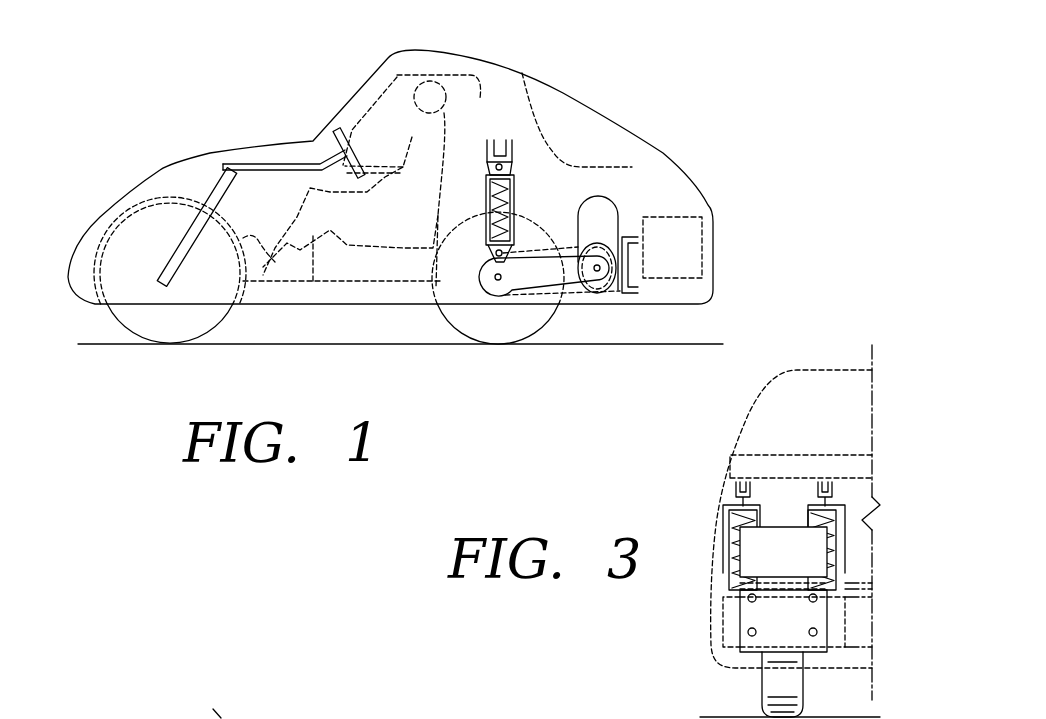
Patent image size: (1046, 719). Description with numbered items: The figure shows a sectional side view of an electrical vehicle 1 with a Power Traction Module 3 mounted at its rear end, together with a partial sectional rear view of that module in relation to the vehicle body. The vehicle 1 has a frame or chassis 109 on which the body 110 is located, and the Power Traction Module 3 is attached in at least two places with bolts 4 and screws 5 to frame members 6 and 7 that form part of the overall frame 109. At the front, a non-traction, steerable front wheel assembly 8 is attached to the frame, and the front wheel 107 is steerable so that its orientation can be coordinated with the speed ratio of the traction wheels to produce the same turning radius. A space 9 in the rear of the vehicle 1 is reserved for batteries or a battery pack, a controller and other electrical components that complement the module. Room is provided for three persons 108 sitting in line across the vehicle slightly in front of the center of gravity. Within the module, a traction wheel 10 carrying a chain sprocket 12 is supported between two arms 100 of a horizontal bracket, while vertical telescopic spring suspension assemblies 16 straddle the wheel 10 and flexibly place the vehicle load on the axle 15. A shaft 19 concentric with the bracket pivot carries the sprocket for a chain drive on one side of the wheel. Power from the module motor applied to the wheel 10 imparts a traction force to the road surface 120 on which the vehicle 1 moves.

In FIG. 1, the vehicle 1 is at (343, 90).
In FIG. 1, the Power Traction Module 3 is at (619, 185).
In FIG. 1, the bolts 4 is at (512, 162).
In FIG. 3, the bolts 4 is at (814, 490).
In FIG. 3, the screws 5 is at (750, 598).
In FIG. 1, the frame member 6 is at (490, 138).
In FIG. 3, the frame member 6 is at (807, 457).
In FIG. 1, the frame member 7 is at (633, 235).
In FIG. 1, the front wheel assembly 8 is at (190, 222).
In FIG. 1, the space 9 is at (708, 208).
In FIG. 1, the traction wheel 10 is at (479, 345).
In FIG. 1, the chain sprocket 12 is at (567, 293).
In FIG. 1, the axle 15 is at (496, 284).
In FIG. 1, the telescopic spring suspension assembly 16 is at (490, 222).
In FIG. 3, the telescopic spring suspension assembly 16 is at (727, 524).
In FIG. 1, the shaft 19 is at (604, 272).
In FIG. 1, the arm 100 is at (532, 268).
In FIG. 1, the front wheel 107 is at (160, 217).
In FIG. 1, the persons 108 is at (458, 63).
In FIG. 1, the frame or chassis 109 is at (295, 283).
In FIG. 1, the body 110 is at (287, 143).
In FIG. 1, the road surface 120 is at (125, 344).